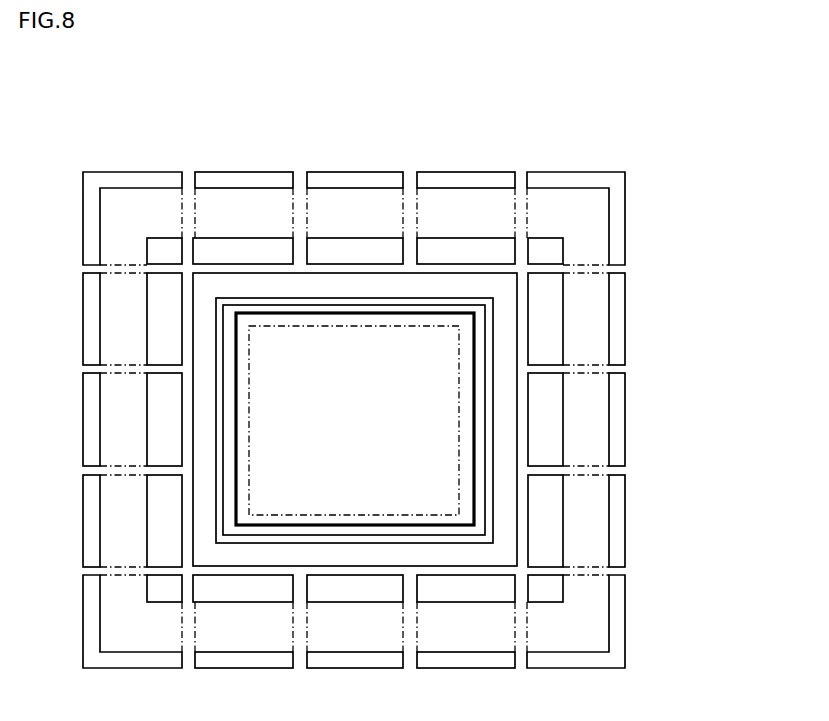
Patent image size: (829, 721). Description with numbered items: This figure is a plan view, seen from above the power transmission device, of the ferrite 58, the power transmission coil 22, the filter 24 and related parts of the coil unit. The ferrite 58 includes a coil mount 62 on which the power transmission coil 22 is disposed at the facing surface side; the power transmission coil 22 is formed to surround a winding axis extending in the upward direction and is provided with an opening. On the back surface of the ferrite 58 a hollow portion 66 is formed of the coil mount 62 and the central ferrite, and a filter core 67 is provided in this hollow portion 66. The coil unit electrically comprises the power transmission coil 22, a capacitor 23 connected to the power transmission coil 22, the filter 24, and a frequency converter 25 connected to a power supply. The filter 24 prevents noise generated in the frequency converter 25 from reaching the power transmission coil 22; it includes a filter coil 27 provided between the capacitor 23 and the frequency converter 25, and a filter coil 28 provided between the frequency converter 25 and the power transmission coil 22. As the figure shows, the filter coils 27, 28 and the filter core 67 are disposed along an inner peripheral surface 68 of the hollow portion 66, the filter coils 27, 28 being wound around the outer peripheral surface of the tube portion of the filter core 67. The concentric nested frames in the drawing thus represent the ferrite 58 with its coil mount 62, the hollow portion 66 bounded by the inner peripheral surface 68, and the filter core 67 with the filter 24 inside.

The power transmission coil 22 is at (567, 568).
The capacitor 23 is at (458, 380).
The filter 24 is at (500, 420).
The filter coil 27 is at (500, 420).
The filter coil 28 is at (503, 522).
The frequency converter 25 is at (473, 407).
The ferrite 58 is at (354, 374).
The coil mount 62 is at (553, 182).
The hollow portion 66 is at (364, 150).
The filter core 67 is at (497, 472).
The inner peripheral surface 68 is at (457, 276).